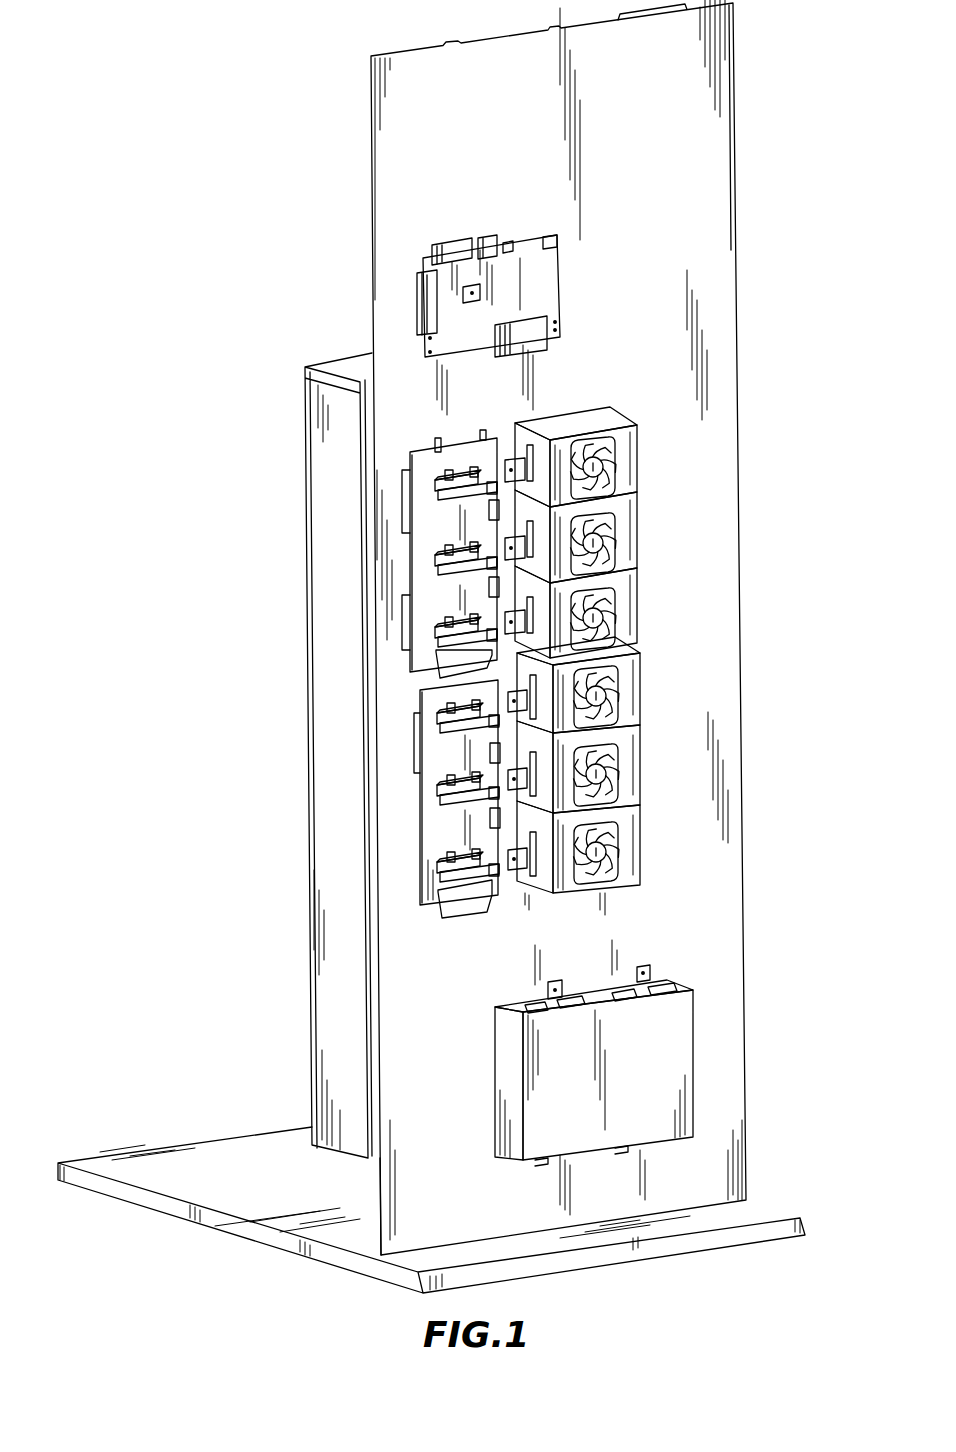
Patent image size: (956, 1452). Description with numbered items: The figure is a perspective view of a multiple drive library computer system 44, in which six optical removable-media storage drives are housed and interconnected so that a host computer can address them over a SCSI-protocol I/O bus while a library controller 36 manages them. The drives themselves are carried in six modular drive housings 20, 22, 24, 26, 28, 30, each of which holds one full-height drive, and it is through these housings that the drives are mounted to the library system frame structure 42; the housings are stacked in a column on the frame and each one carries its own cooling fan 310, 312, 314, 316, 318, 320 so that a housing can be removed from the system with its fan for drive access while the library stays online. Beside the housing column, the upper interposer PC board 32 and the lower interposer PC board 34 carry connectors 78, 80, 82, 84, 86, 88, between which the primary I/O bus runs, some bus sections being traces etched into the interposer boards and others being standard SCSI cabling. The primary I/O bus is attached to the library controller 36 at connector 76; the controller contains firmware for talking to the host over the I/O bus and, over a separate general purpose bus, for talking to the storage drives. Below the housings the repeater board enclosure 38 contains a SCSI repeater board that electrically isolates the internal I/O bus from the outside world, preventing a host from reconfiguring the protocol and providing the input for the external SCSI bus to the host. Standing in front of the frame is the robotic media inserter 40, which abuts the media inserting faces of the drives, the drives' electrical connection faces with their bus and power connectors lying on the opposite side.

The modular drive housing 20 is at (637, 475).
The modular drive housing 22 is at (640, 550).
The modular drive housing 24 is at (640, 630).
The modular drive housing 26 is at (642, 705).
The modular drive housing 28 is at (642, 788).
The modular drive housing 30 is at (642, 862).
The cooling fan 310 is at (600, 462).
The cooling fan 312 is at (598, 540).
The cooling fan 314 is at (598, 618).
The cooling fan 316 is at (600, 690).
The cooling fan 318 is at (600, 770).
The cooling fan 320 is at (600, 850).
The upper interposer PC board 32 is at (410, 667).
The lower interposer PC board 34 is at (420, 840).
The library controller 36 is at (423, 258).
The repeater board enclosure 38 is at (693, 1060).
The robotic media inserter 40 is at (292, 538).
The library system frame structure 42 is at (737, 290).
The multiple drive library computer system 44 is at (242, 655).
The connector 76 is at (538, 342).
The connector 78 is at (423, 497).
The connector 80 is at (423, 572).
The connector 82 is at (443, 647).
The connector 84 is at (437, 727).
The connector 86 is at (435, 803).
The connector 88 is at (433, 880).